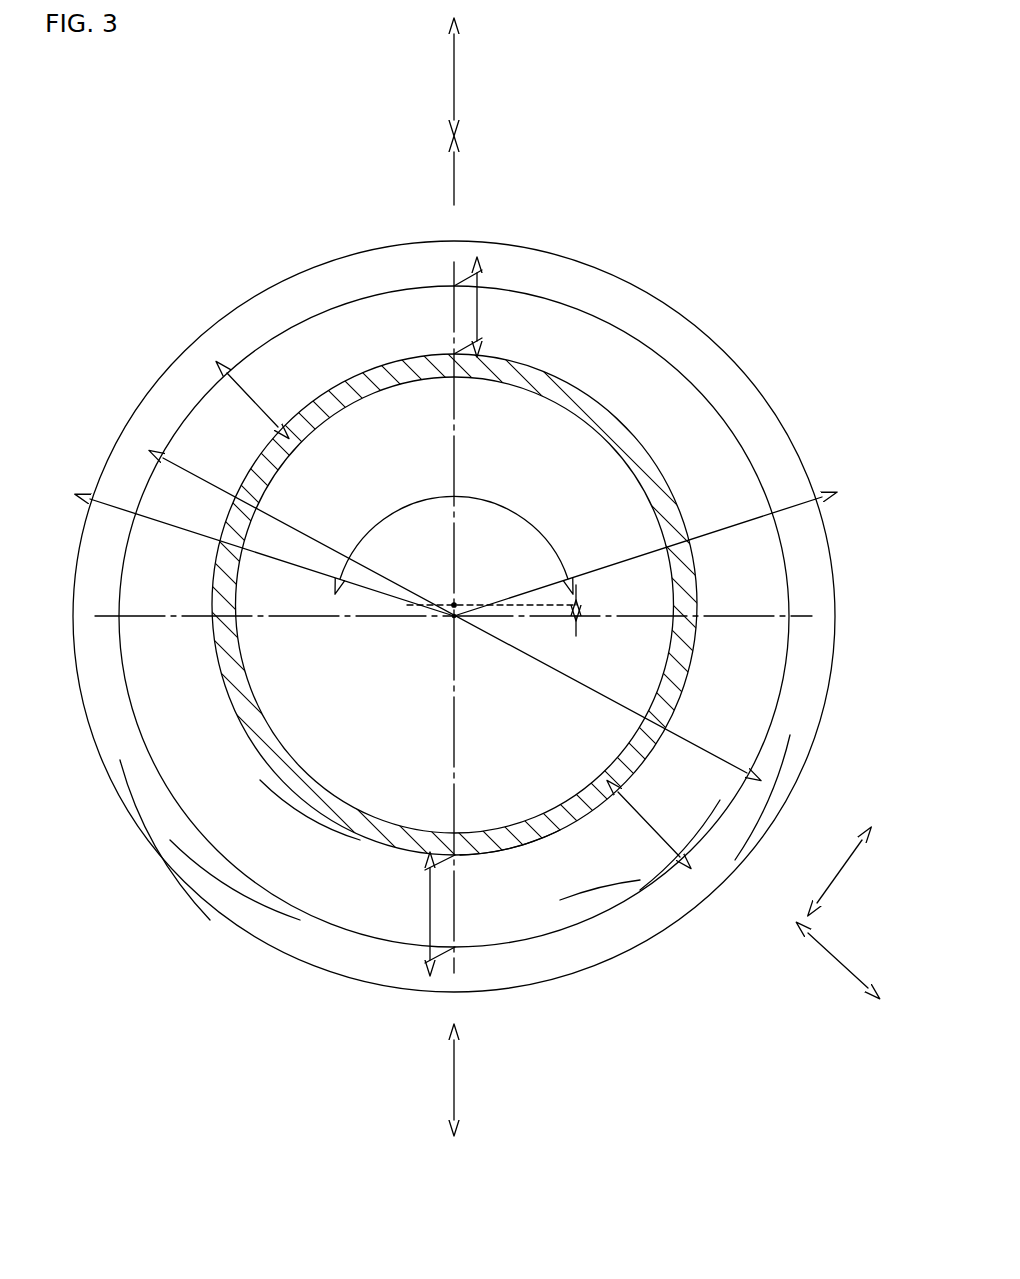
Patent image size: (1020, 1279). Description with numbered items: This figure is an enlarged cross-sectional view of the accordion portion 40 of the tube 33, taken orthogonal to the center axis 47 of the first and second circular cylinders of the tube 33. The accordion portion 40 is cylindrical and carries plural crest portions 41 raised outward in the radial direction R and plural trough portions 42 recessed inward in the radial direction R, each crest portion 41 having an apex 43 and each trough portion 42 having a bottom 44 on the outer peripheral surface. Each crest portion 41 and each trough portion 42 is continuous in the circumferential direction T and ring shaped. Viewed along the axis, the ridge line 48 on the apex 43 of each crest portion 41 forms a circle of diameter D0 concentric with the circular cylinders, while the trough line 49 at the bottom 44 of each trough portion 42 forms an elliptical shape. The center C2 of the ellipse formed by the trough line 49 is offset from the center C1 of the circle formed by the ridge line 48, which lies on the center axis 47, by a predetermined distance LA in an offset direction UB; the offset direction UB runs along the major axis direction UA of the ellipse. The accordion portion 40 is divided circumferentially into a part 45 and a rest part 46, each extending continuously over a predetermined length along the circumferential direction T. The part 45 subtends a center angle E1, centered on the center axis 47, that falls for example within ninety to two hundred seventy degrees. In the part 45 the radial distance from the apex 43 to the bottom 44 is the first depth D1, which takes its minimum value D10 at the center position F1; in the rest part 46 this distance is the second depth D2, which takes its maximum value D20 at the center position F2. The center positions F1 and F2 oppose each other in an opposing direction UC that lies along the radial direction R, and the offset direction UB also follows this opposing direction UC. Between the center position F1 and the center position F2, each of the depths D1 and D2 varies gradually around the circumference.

The tube 33 is at (723, 812).
The accordion portion 40 is at (185, 812).
The crest portion 41 is at (245, 875).
The trough portion 42 is at (315, 810).
The apex 43 is at (598, 905).
The bottom 44 is at (512, 855).
The part 45 is at (680, 310).
The rest part 46 is at (807, 770).
The center axis 47 is at (454, 616).
The ridge line 48 is at (202, 393).
The trough line 49 is at (255, 452).
The center of the circle C1 is at (454, 616).
The center of the ellipse C2 is at (454, 605).
The predetermined distance LA is at (578, 610).
The diameter D0 is at (164, 460).
The first depth D1 is at (258, 398).
The second depth D2 is at (650, 827).
The minimum value D10 is at (478, 305).
The maximum value D20 is at (430, 915).
The center angle E1 is at (452, 497).
The center position F1 is at (454, 286).
The center position F2 is at (455, 947).
The major axis direction UA is at (456, 1072).
The offset direction UB is at (456, 188).
The opposing direction UC is at (456, 75).
The radial direction R is at (454, 85).
The circumferential direction T is at (843, 872).